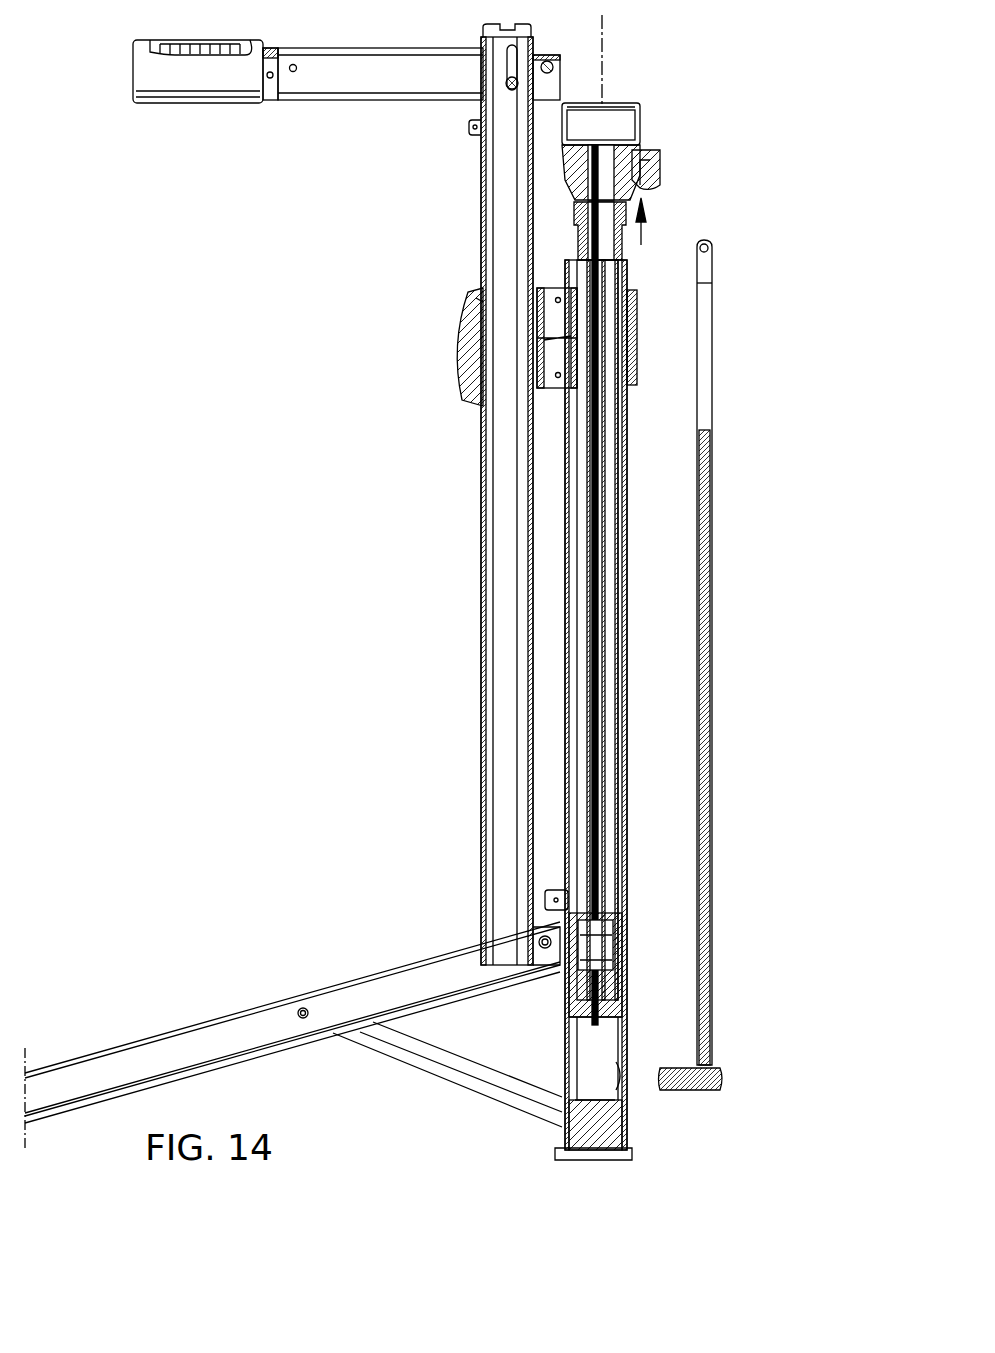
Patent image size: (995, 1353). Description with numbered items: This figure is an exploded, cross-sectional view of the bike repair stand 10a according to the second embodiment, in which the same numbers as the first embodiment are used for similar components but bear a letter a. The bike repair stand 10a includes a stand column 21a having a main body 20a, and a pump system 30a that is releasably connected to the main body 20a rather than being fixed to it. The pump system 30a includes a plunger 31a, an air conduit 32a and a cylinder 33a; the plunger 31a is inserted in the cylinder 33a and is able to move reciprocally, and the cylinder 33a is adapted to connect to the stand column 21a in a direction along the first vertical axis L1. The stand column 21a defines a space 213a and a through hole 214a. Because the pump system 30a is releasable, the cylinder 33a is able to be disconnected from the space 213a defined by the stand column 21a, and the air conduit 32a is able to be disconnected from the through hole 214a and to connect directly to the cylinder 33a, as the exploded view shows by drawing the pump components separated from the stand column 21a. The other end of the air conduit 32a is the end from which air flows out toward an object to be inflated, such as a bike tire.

The bike repair stand 10a is at (343, 292).
The main body 20a is at (463, 486).
The stand column 21a is at (628, 620).
The space 213a is at (606, 1097).
The through hole 214a is at (628, 1078).
The pump system 30a is at (700, 165).
The plunger 31a is at (622, 280).
The air conduit 32a is at (697, 508).
The cylinder 33a is at (617, 588).
The first vertical axis L1 is at (610, 46).